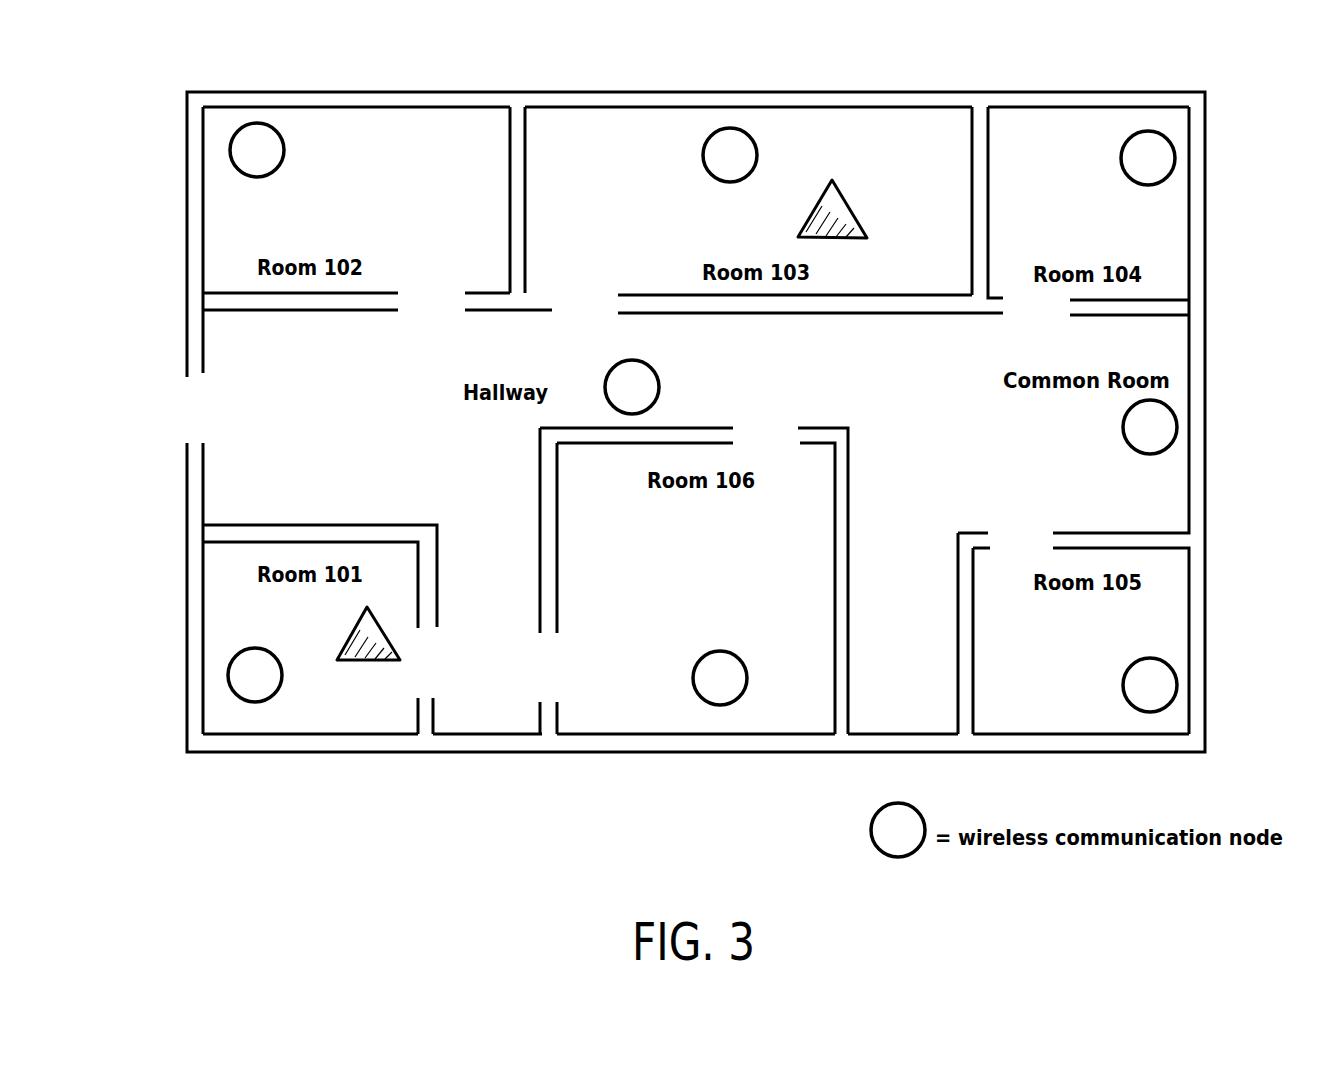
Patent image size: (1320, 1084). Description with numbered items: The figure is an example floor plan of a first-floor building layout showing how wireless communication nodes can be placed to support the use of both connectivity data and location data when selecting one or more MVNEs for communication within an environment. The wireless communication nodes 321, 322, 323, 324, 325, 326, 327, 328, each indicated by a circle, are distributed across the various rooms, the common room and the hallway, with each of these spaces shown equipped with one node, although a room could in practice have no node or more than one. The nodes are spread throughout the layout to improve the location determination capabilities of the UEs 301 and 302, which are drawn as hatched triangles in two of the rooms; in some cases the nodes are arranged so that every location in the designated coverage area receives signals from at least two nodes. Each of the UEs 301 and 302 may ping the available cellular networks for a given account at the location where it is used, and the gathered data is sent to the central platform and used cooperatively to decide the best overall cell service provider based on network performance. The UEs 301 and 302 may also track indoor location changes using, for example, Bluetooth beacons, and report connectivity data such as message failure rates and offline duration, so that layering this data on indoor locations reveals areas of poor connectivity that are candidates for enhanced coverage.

The UE 301 is at (392, 640).
The UE 302 is at (852, 192).
The wireless communication node 321 is at (240, 682).
The wireless communication node 322 is at (245, 152).
The wireless communication node 323 is at (720, 142).
The wireless communication node 324 is at (1138, 158).
The wireless communication node 325 is at (1140, 690).
The wireless communication node 326 is at (712, 685).
The wireless communication node 327 is at (1155, 428).
The wireless communication node (Hallway) 328 is at (640, 388).